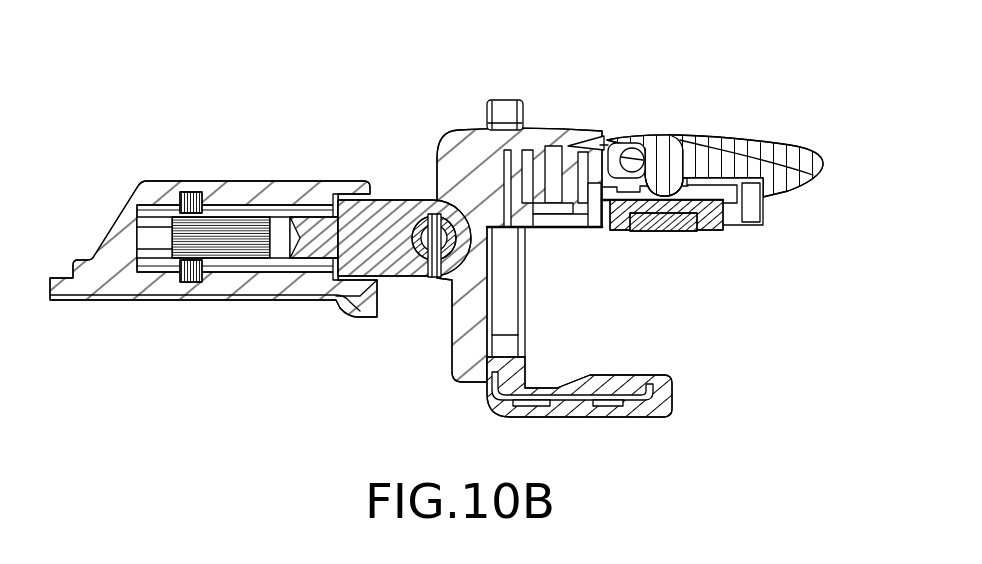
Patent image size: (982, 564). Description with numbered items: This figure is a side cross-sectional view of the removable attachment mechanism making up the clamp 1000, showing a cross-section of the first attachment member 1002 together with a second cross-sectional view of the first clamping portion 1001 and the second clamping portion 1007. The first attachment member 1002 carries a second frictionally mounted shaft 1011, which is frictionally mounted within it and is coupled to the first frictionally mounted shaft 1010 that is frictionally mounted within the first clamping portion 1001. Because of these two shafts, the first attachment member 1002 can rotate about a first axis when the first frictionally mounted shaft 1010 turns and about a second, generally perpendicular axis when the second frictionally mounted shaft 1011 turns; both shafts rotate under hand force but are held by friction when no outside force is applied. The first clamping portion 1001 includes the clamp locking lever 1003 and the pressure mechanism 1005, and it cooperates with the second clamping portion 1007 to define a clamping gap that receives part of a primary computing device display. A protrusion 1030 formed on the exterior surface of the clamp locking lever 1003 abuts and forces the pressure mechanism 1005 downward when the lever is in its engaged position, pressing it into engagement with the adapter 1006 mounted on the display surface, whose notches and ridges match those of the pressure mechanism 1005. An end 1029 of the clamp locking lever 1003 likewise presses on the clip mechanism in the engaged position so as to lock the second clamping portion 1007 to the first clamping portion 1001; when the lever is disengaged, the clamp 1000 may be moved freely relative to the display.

The clamp 1000 is at (401, 85).
The first clamping portion 1001 is at (552, 133).
The first attachment member 1002 is at (276, 190).
The clamp locking lever 1003 is at (747, 138).
The pressure mechanism 1005 is at (713, 226).
The adapter 1006 is at (668, 232).
The second clamping portion 1007 is at (675, 386).
The first frictionally mounted shaft 1010 is at (428, 277).
The second frictionally mounted shaft 1011 is at (250, 258).
The end of the clamp locking lever 1029 is at (627, 143).
The protrusion 1030 is at (668, 192).